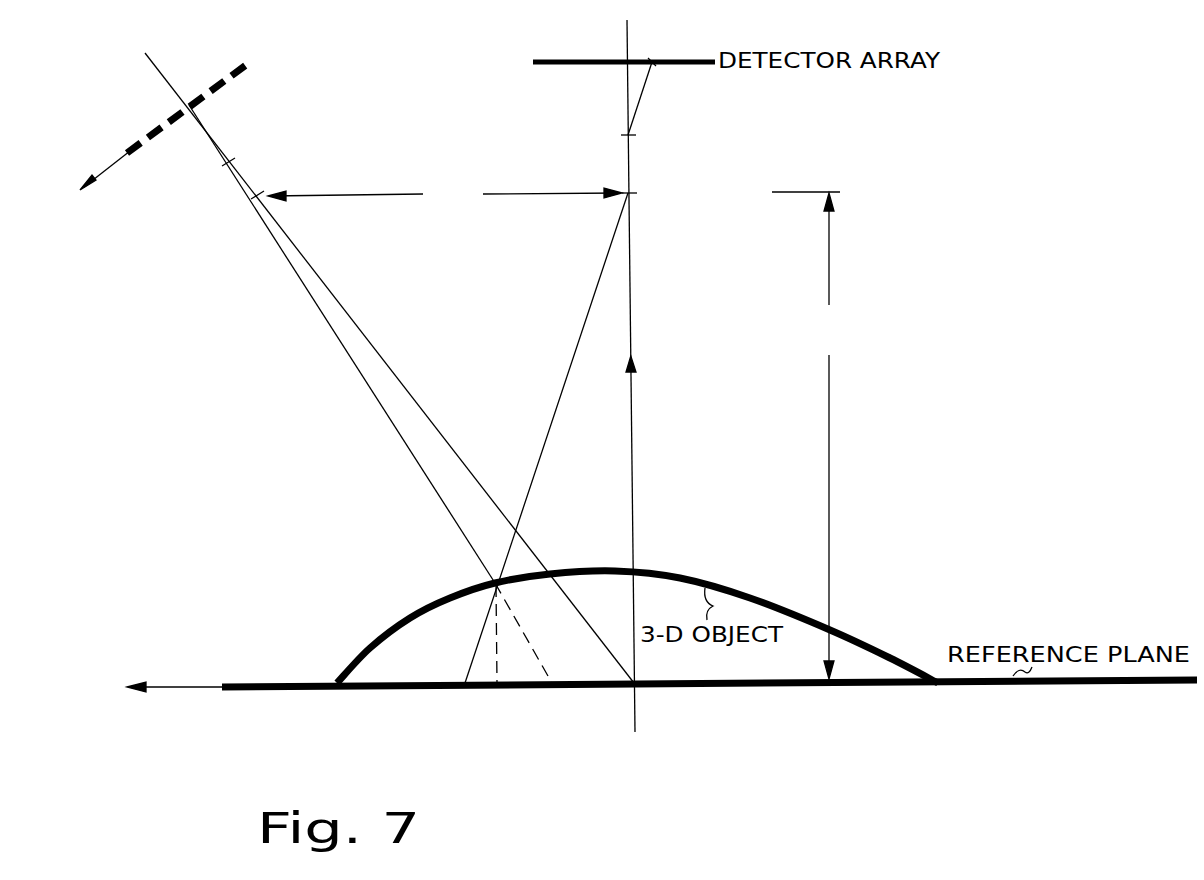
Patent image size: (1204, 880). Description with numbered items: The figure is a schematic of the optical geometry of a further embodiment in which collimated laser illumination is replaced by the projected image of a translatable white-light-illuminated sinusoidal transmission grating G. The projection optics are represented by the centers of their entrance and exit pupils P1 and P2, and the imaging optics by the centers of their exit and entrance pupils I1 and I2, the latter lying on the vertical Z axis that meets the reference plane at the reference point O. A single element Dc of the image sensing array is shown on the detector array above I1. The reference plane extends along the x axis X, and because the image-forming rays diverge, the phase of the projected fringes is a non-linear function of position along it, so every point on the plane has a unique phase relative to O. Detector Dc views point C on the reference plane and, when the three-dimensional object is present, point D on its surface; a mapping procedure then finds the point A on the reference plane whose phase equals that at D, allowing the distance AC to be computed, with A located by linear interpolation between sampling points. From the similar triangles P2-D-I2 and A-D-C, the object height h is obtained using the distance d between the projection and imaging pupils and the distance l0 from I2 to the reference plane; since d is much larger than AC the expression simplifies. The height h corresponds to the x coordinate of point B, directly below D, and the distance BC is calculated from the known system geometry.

The grating G is at (229, 72).
The center of the entrance pupil of the projection optics P1 is at (245, 152).
The center of the exit pupil of the projection optics P2 is at (243, 210).
The element of the image sensing array Dc is at (653, 48).
The center of the exit pupil of the imaging optics I1 is at (645, 136).
The center of the entrance pupil of the imaging optics I2 is at (646, 195).
The distance d is at (445, 194).
The distance l0 is at (808, 435).
The Z axis Z is at (642, 376).
The x axis X is at (175, 674).
The point D of the object D is at (506, 627).
The object height h is at (505, 634).
The point A on the reference plane A is at (551, 700).
The point B is at (496, 700).
The point C on the reference plane C is at (459, 700).
The reference point O is at (644, 699).